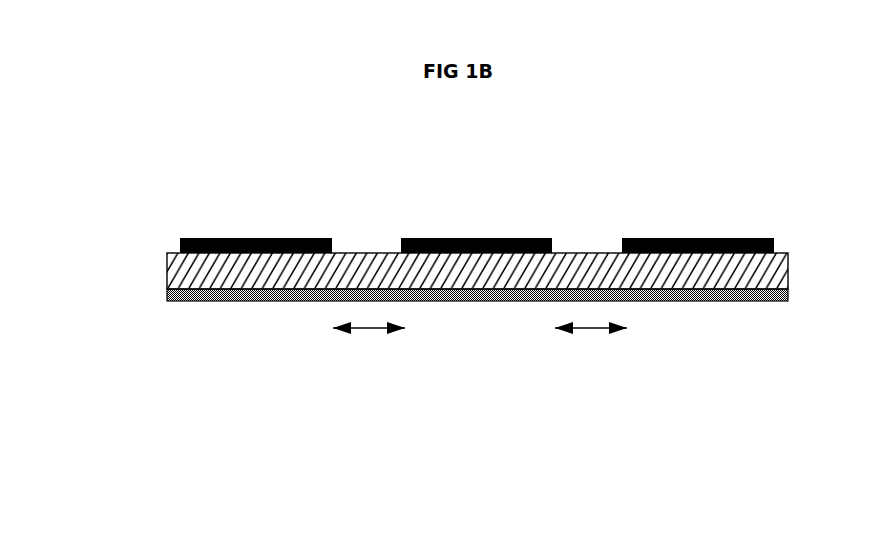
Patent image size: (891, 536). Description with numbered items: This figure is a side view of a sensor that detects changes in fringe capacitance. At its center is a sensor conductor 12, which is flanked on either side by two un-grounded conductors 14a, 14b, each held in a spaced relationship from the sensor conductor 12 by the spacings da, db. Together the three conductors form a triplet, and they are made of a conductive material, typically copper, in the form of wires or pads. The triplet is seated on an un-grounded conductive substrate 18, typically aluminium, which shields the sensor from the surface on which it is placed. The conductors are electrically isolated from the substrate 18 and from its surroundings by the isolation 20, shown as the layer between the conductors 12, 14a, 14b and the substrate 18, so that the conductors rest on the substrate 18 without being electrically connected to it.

The sensor conductor 12 is at (477, 237).
The un-grounded conductor 14a is at (257, 237).
The un-grounded conductor 14b is at (697, 237).
The un-grounded conductive substrate 18 is at (792, 296).
The electrical isolation 20 is at (167, 272).
The spacing da is at (369, 352).
The spacing db is at (591, 352).